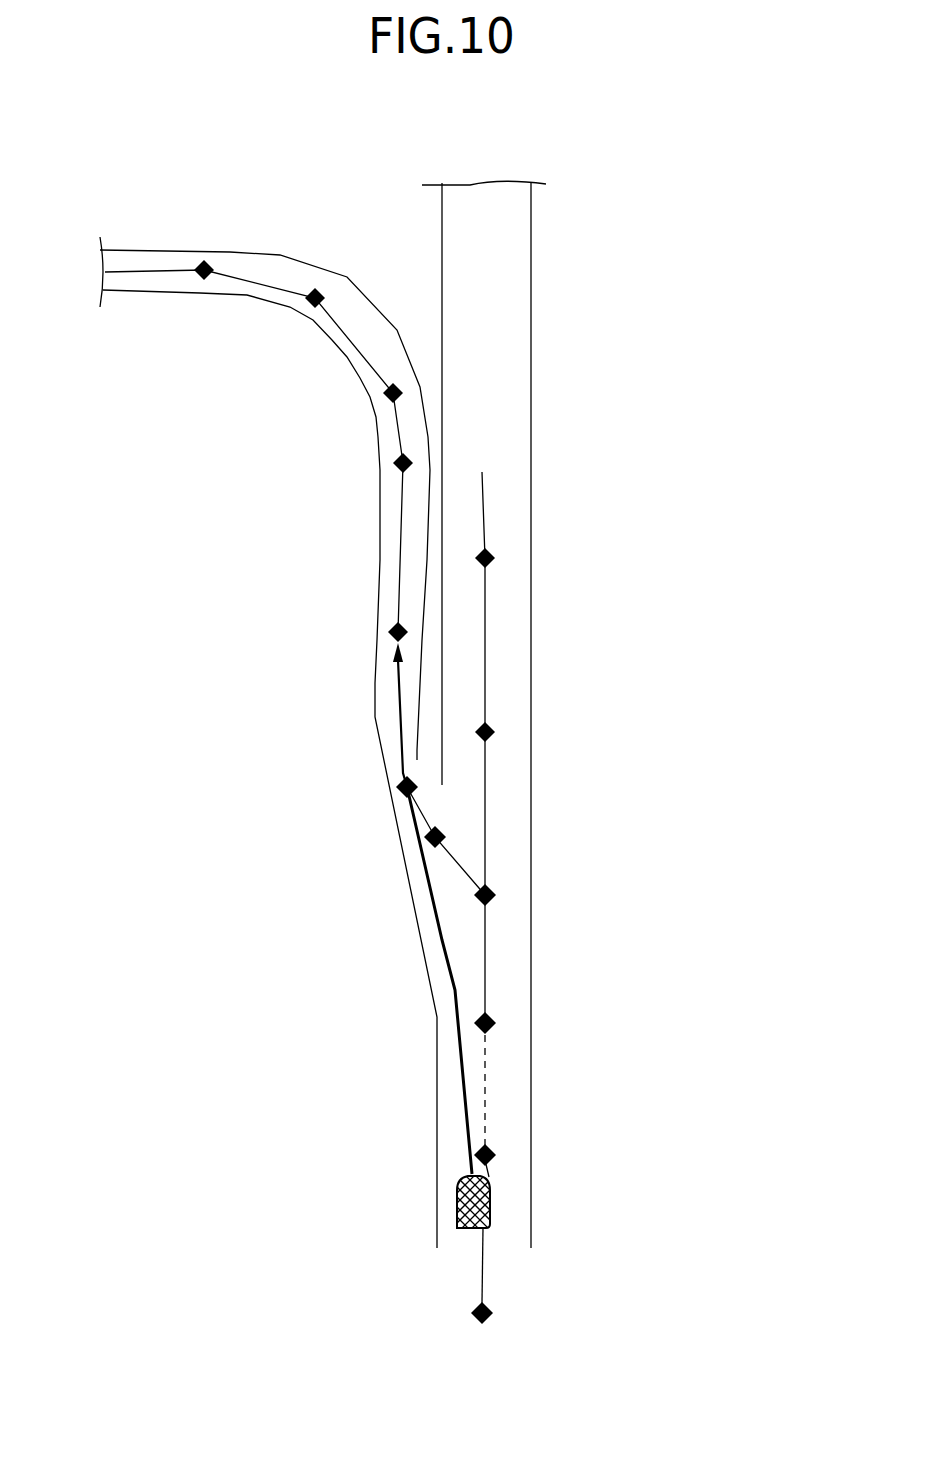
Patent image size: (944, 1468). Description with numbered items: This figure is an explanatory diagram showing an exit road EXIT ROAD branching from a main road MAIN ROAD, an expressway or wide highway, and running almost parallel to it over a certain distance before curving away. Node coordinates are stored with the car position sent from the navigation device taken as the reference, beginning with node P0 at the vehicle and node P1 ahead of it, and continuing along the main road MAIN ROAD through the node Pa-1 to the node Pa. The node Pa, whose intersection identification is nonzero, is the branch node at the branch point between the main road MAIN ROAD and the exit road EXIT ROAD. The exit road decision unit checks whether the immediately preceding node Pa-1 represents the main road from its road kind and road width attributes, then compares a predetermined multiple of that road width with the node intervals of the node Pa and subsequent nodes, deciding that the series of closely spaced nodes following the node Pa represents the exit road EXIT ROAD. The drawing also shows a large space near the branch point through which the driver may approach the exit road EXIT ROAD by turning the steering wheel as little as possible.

The main road MAIN ROAD is at (542, 477).
The exit road EXIT ROAD is at (372, 597).
The node Pa is at (495, 895).
The node Pa-1 is at (495, 1023).
The node P1 is at (495, 1155).
The node P0 is at (504, 1314).